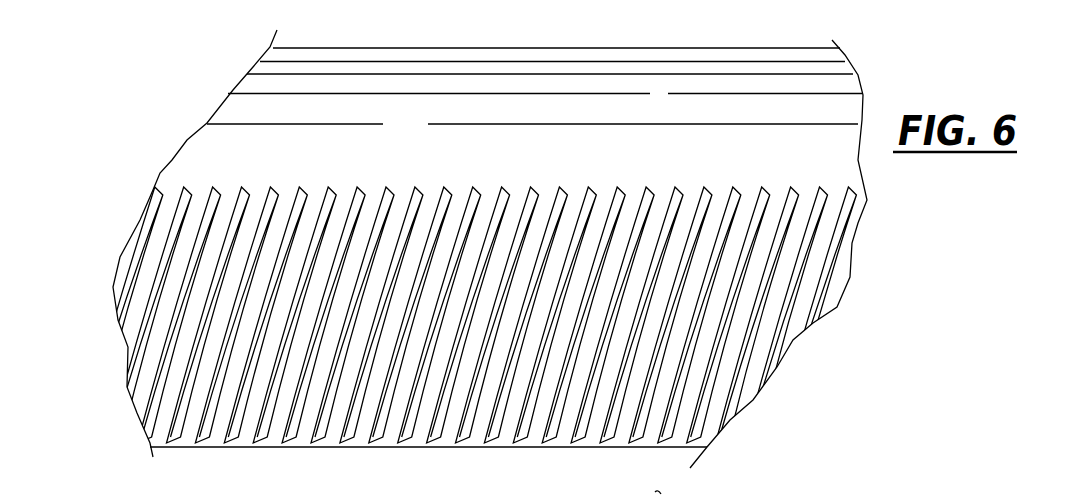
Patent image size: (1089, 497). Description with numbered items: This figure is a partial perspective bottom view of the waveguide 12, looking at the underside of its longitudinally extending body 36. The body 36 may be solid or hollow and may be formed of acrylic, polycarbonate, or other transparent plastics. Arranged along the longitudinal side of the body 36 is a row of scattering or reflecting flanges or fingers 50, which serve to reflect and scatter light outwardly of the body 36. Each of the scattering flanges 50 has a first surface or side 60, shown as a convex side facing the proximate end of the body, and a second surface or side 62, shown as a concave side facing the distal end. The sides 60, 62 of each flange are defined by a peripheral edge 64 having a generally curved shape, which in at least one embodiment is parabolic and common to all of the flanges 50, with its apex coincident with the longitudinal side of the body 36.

The waveguide 12 is at (441, 45).
The body 36 is at (633, 70).
The scattering flanges 50 is at (468, 294).
The first surface 60 is at (300, 190).
The second surface 62 is at (417, 195).
The peripheral edge 64 is at (515, 373).